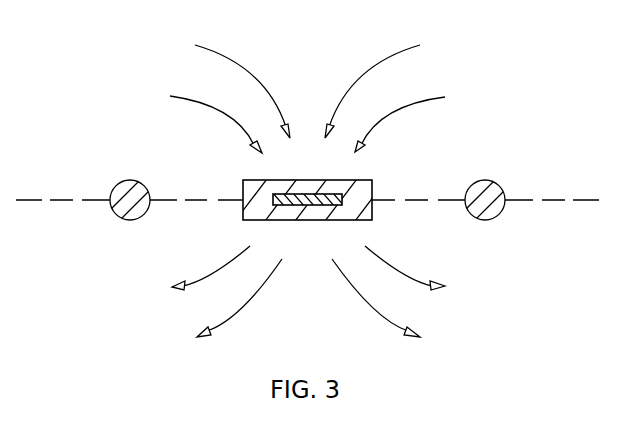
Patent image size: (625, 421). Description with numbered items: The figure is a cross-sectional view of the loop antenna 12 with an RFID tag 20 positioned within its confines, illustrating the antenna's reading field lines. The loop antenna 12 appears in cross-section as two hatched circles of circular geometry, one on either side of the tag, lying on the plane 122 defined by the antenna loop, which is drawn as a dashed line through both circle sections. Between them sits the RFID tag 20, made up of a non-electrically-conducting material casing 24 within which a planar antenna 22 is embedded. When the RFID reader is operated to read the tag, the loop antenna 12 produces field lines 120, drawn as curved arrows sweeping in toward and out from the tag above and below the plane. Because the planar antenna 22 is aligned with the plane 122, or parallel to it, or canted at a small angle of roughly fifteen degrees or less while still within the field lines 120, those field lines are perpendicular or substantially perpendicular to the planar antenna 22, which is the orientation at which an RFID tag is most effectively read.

The loop antenna 12 is at (120, 218).
The RFID tag 20 is at (325, 189).
The planar antenna 22 is at (273, 196).
The non-electrically-conducting material casing 24 is at (367, 215).
The field lines 120 is at (357, 83).
The plane 122 is at (553, 199).